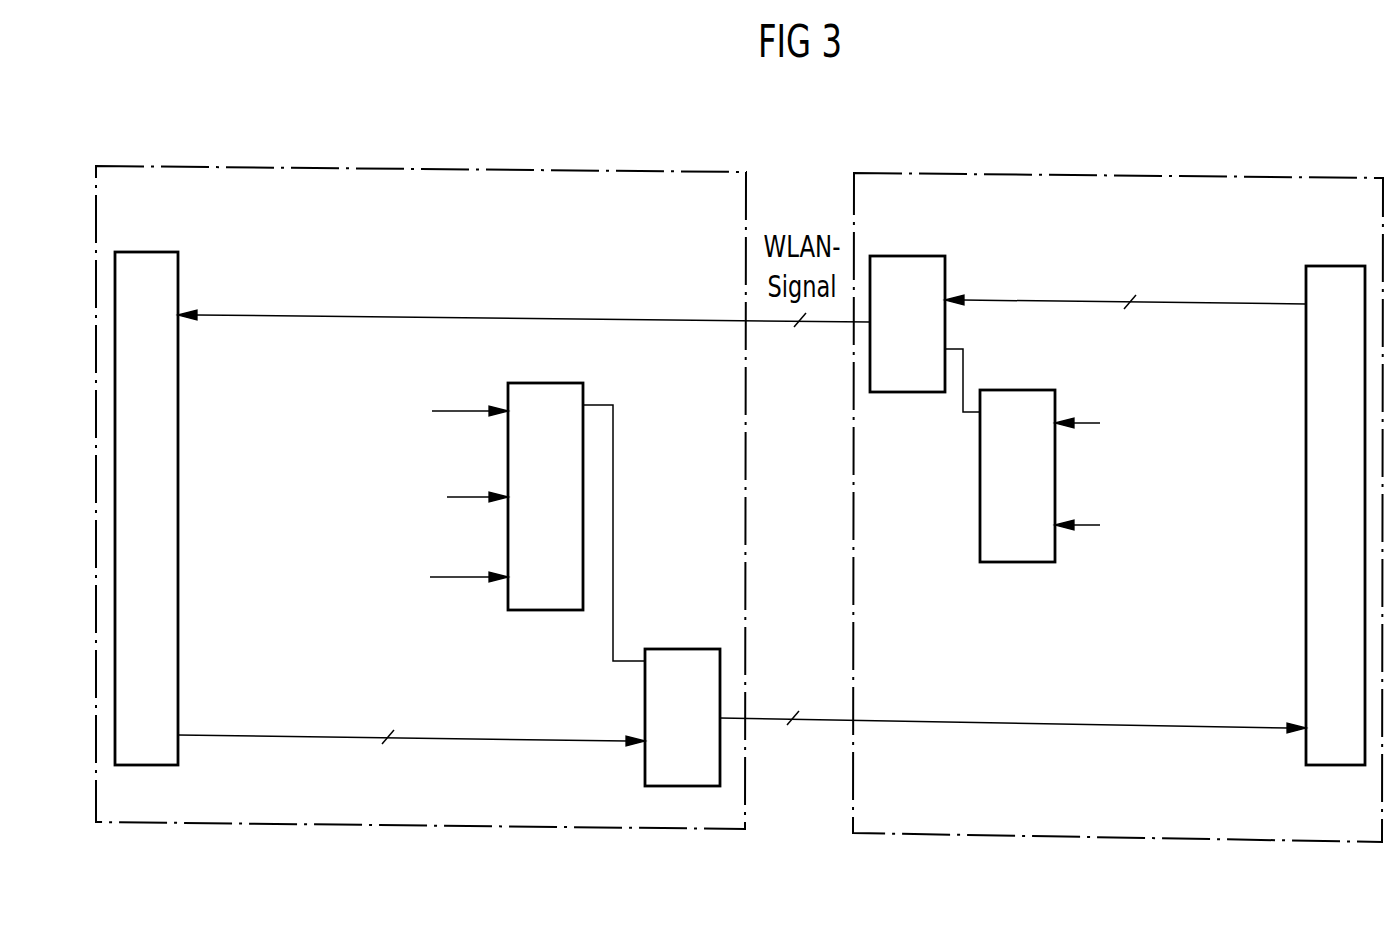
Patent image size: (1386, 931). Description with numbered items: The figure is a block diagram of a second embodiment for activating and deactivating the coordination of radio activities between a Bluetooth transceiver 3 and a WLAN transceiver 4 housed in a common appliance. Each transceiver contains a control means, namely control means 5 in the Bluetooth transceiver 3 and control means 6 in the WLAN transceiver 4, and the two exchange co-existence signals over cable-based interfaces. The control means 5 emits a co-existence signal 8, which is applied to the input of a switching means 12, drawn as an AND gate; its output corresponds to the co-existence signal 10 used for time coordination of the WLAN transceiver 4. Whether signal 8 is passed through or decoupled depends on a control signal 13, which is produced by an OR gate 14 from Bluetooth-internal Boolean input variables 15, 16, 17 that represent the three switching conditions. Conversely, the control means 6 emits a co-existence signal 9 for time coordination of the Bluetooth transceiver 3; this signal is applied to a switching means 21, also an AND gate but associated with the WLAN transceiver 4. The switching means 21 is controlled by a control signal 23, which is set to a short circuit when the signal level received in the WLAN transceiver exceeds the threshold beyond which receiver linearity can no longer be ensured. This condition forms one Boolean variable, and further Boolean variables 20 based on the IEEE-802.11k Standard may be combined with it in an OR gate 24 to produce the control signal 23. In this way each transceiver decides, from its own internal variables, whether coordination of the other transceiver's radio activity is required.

The Bluetooth transceiver 3 is at (653, 169).
The WLAN transceiver 4 is at (957, 173).
The control means 5 is at (178, 268).
The control means 6 is at (1306, 280).
The co-existence signal 8 is at (338, 737).
The co-existence signal 9 is at (1178, 304).
The co-existence signal 10 is at (1050, 727).
The switching means 12 is at (682, 649).
The control signal 13 is at (613, 490).
The OR gate 14 is at (552, 612).
The input variable 15 is at (472, 415).
The input variable 16 is at (472, 500).
The input variable 17 is at (470, 580).
The Boolean variable 20 is at (1095, 423).
The switching means 21 is at (945, 272).
The control signal 23 is at (965, 362).
The OR gate (WLAN) 24 is at (979, 497).